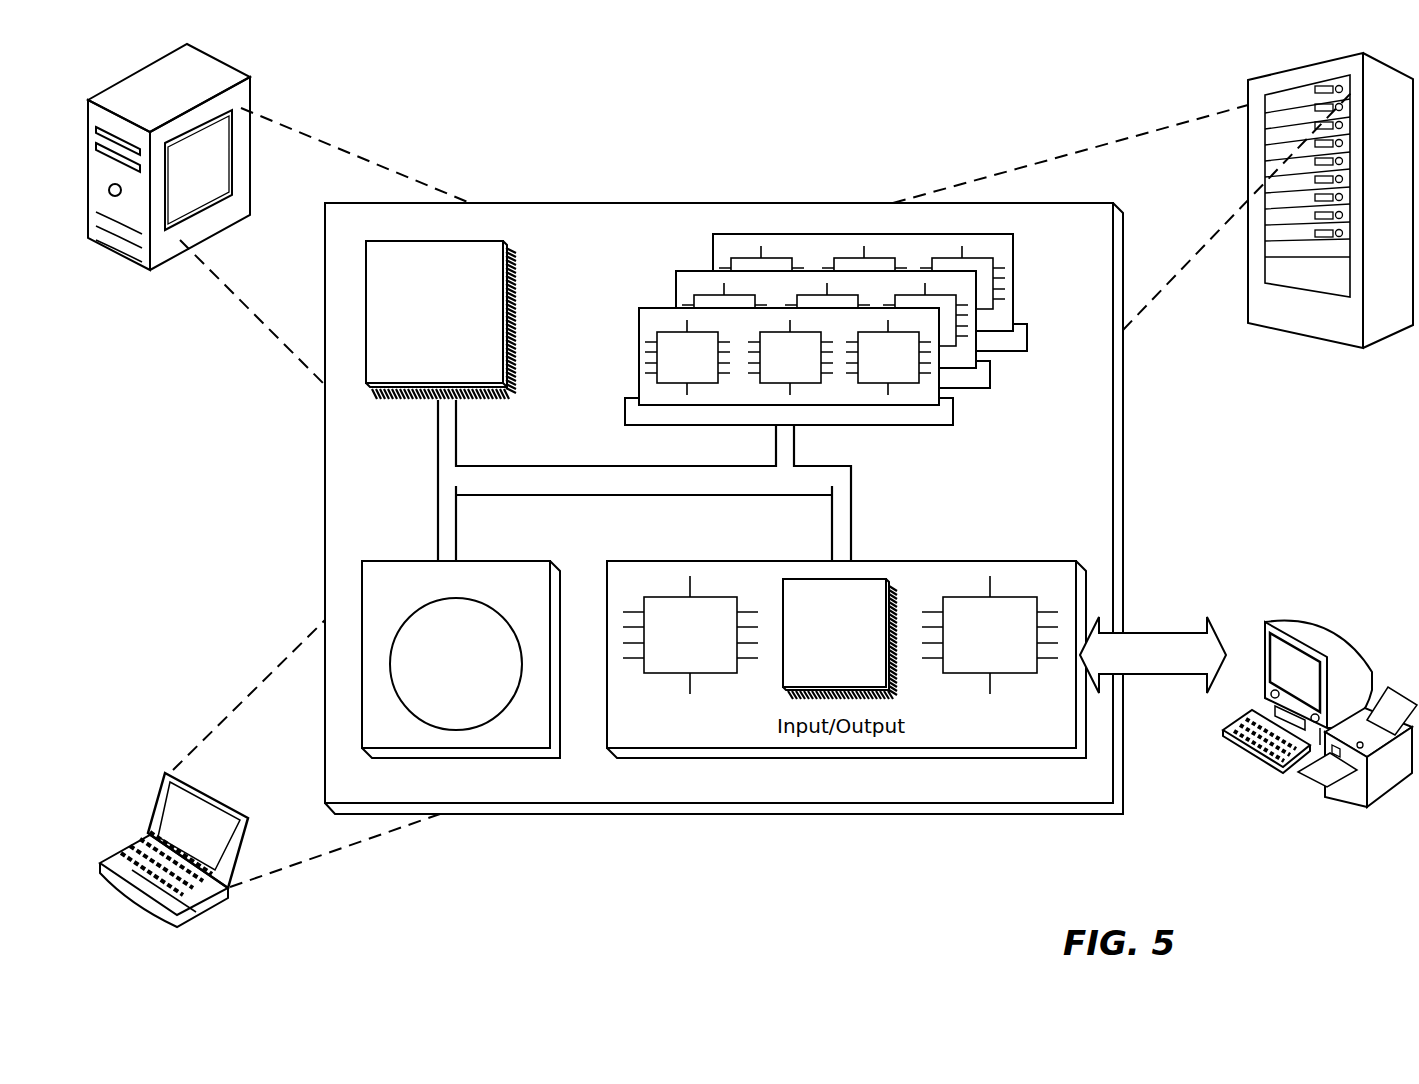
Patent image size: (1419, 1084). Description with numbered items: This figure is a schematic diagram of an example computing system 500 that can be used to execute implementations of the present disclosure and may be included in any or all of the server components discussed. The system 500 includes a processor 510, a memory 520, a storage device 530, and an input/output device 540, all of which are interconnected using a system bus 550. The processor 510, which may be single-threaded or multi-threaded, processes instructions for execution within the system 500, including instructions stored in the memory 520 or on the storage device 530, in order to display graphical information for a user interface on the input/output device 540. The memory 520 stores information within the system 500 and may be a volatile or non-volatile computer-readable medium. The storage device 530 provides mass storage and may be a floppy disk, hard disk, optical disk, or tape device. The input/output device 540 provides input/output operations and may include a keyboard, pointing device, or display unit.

The computing system 500 is at (535, 115).
The processor 510 is at (460, 379).
The memory 520 is at (1018, 381).
The storage device 530 is at (541, 741).
The input/output device 540 is at (1262, 620).
The system bus 550 is at (640, 484).